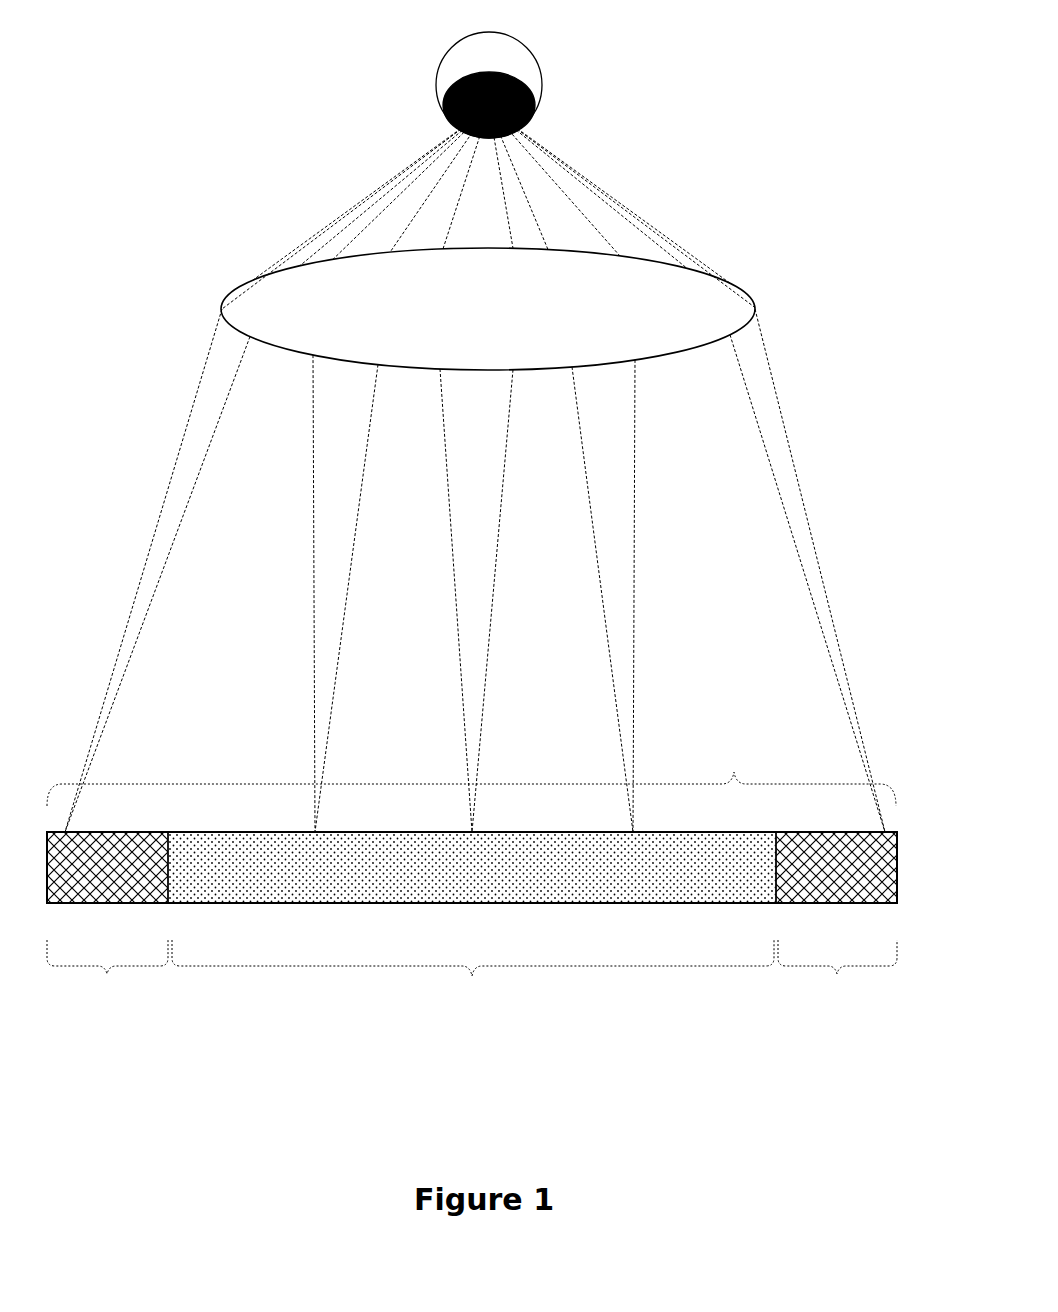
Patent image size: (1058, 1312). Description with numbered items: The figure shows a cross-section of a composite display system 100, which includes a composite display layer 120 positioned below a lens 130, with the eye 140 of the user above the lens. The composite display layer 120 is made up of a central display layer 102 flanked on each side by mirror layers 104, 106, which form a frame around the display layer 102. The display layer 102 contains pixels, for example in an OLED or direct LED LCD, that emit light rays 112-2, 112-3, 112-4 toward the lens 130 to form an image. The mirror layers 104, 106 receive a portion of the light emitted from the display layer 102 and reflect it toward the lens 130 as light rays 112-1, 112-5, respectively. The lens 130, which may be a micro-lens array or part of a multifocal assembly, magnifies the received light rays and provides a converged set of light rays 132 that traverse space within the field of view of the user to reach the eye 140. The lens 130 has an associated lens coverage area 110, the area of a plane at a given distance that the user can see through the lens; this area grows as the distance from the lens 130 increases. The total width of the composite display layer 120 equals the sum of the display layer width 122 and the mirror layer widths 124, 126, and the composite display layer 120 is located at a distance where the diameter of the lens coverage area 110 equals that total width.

The composite display system 100 is at (762, 132).
The display layer 102 is at (515, 830).
The mirror layer 104 is at (112, 830).
The mirror layer 106 is at (834, 830).
The lens coverage area 110 is at (471, 770).
The light ray 112-1 is at (182, 446).
The light ray 112-2 is at (361, 524).
The light ray 112-3 is at (503, 497).
The light ray 112-4 is at (636, 438).
The light ray 112-5 is at (785, 412).
The composite display layer 120 is at (506, 853).
The display layer width 122 is at (473, 977).
The mirror layer width 124 is at (107, 979).
The mirror layer width 126 is at (837, 979).
The lens 130 is at (750, 292).
The convergent set of light rays 132 is at (626, 188).
The eye 140 is at (498, 32).